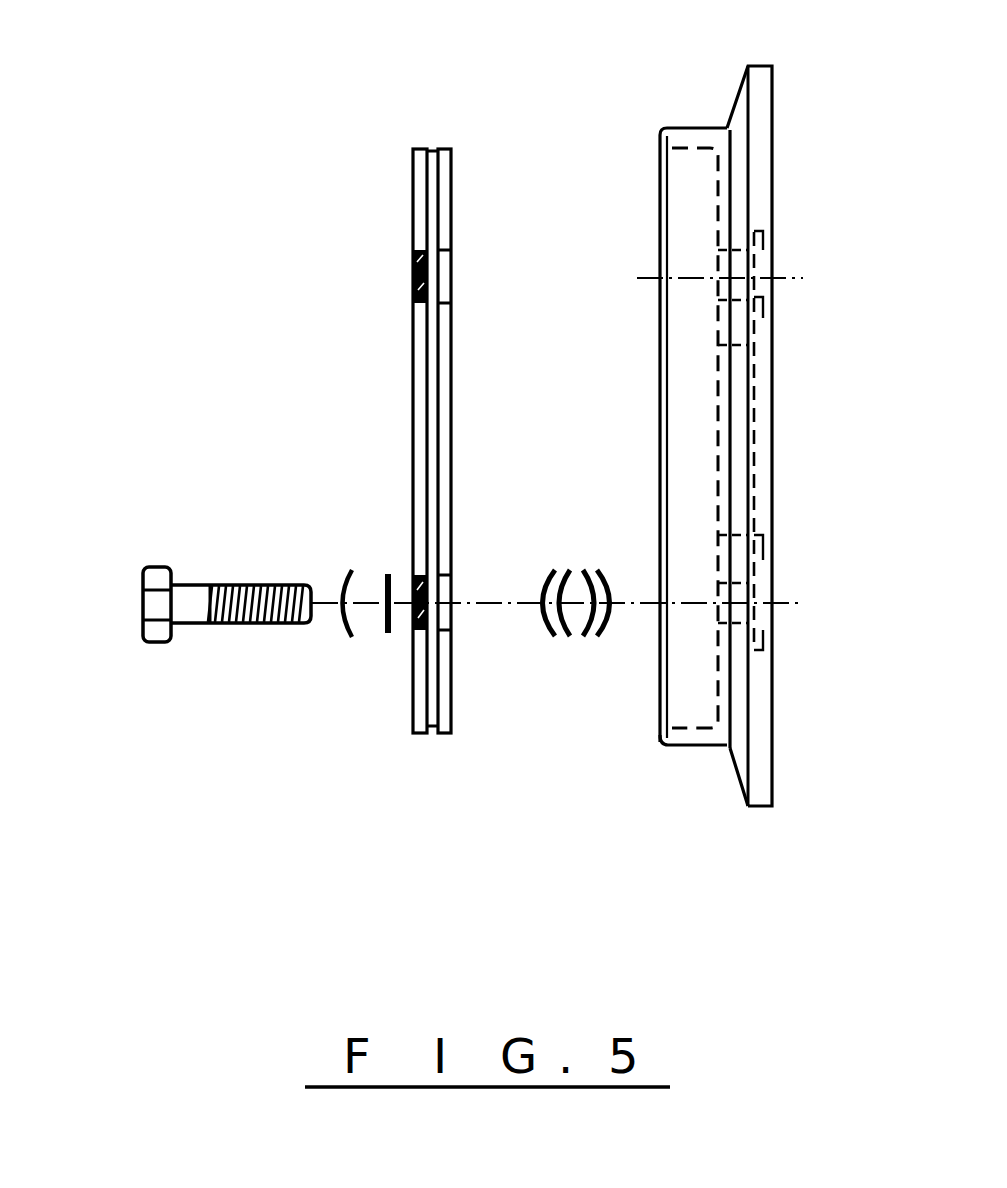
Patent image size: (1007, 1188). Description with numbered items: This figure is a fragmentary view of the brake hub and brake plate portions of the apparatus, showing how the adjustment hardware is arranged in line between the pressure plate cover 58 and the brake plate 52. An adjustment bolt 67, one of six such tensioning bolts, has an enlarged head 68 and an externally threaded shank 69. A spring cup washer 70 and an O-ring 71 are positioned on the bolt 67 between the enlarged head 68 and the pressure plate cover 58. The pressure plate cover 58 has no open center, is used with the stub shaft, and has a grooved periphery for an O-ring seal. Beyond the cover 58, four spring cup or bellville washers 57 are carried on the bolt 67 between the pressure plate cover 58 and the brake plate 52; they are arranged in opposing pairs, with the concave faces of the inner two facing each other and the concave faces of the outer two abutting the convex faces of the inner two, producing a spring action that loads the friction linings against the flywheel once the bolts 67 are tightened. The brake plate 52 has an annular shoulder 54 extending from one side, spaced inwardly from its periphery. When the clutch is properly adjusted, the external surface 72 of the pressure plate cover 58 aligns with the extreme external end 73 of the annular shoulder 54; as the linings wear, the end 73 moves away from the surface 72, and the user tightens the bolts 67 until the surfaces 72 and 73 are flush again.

The brake plate 52 is at (773, 140).
The annular shoulder 54 is at (698, 745).
The spring cup washers 57 is at (577, 645).
The pressure plate cover 58 is at (375, 376).
The adjustment bolt 67 is at (184, 624).
The enlarged head 68 is at (140, 604).
The externally threaded shank 69 is at (250, 583).
The spring cup washer 70 is at (350, 641).
The O-ring 71 is at (387, 568).
The external surface 72 is at (411, 215).
The extreme external end 73 is at (660, 128).